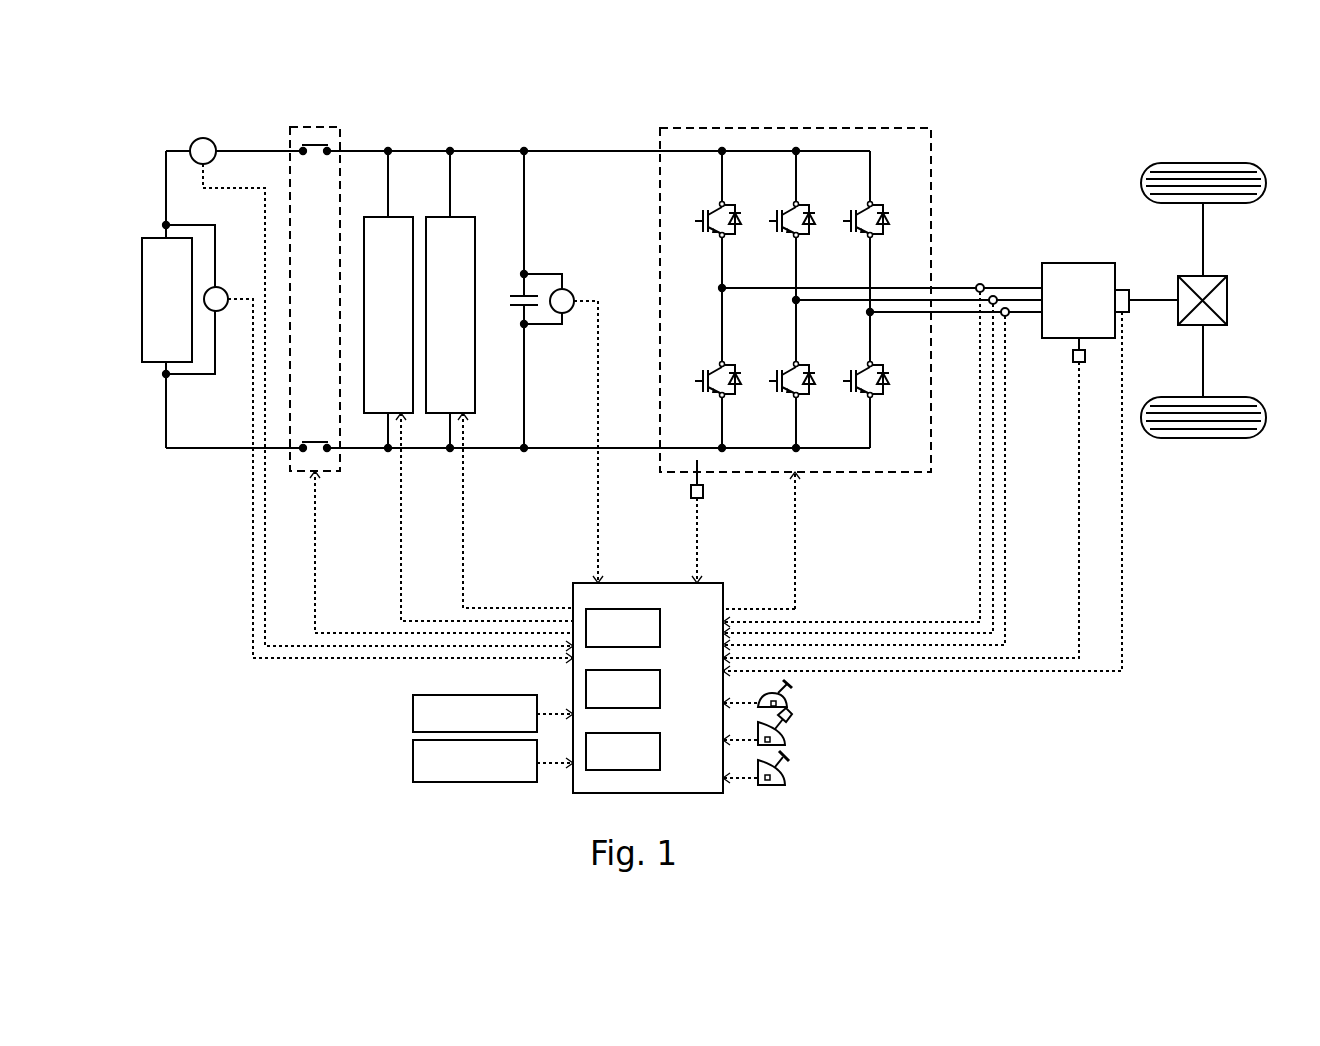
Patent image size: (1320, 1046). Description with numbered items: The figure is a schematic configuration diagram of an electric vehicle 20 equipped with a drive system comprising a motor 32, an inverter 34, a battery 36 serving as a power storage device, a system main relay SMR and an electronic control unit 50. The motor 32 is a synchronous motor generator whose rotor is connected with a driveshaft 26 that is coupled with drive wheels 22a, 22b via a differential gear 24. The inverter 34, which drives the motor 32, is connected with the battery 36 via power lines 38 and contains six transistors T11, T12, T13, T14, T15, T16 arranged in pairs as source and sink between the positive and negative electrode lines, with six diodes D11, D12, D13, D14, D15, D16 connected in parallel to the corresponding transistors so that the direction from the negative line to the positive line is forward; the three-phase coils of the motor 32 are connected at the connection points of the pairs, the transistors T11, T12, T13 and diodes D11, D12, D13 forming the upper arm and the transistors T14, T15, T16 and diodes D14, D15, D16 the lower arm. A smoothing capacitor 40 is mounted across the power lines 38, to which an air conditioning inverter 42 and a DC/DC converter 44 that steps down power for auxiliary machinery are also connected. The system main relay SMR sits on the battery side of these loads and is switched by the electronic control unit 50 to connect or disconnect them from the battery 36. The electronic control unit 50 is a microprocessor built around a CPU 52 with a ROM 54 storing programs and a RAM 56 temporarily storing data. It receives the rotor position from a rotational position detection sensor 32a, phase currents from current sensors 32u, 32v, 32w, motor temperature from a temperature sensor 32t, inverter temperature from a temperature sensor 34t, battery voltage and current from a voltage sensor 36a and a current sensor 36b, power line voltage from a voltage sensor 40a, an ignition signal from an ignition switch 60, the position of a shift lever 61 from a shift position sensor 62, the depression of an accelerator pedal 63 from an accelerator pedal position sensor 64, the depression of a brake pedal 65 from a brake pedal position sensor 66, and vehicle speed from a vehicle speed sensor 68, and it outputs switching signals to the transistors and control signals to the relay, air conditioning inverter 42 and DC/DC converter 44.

The electric vehicle 20 is at (931, 98).
The drive wheel 22a is at (1203, 162).
The drive wheel 22b is at (1202, 440).
The differential gear 24 is at (1213, 275).
The driveshaft 26 is at (1152, 298).
The motor 32 is at (1078, 262).
The rotational position detection sensor 32a is at (1123, 289).
The current sensor 32u is at (979, 283).
The current sensor 32v is at (994, 295).
The current sensor 32w is at (1007, 307).
The temperature sensor 32t is at (1074, 363).
The inverter 34 is at (795, 344).
The temperature sensor 34t is at (704, 499).
The battery 36 is at (155, 237).
The voltage sensor 36a is at (224, 287).
The current sensor 36b is at (203, 138).
The power lines 38 is at (648, 152).
The capacitor 40 is at (515, 292).
The voltage sensor 40a is at (566, 287).
The air conditioning inverter 42 is at (470, 216).
The DC/DC converter 44 is at (402, 216).
The electronic control unit 50 is at (648, 664).
The CPU 52 is at (661, 629).
The ROM 54 is at (661, 689).
The RAM 56 is at (661, 751).
The ignition switch 60 is at (413, 714).
The shift lever 61 is at (792, 687).
The shift position sensor 62 is at (787, 704).
The accelerator pedal 63 is at (790, 725).
The accelerator pedal position sensor 64 is at (785, 741).
The brake pedal 65 is at (790, 765).
The brake pedal position sensor 66 is at (785, 781).
The vehicle speed sensor 68 is at (413, 763).
The system main relay SMR is at (317, 125).
The transistor T11 is at (702, 218).
The transistor T12 is at (776, 218).
The transistor T13 is at (850, 218).
The transistor T14 is at (702, 378).
The transistor T15 is at (776, 378).
The transistor T16 is at (850, 378).
The diode D11 is at (740, 226).
The diode D12 is at (814, 226).
The diode D13 is at (888, 226).
The diode D14 is at (740, 386).
The diode D15 is at (814, 386).
The diode D16 is at (888, 386).